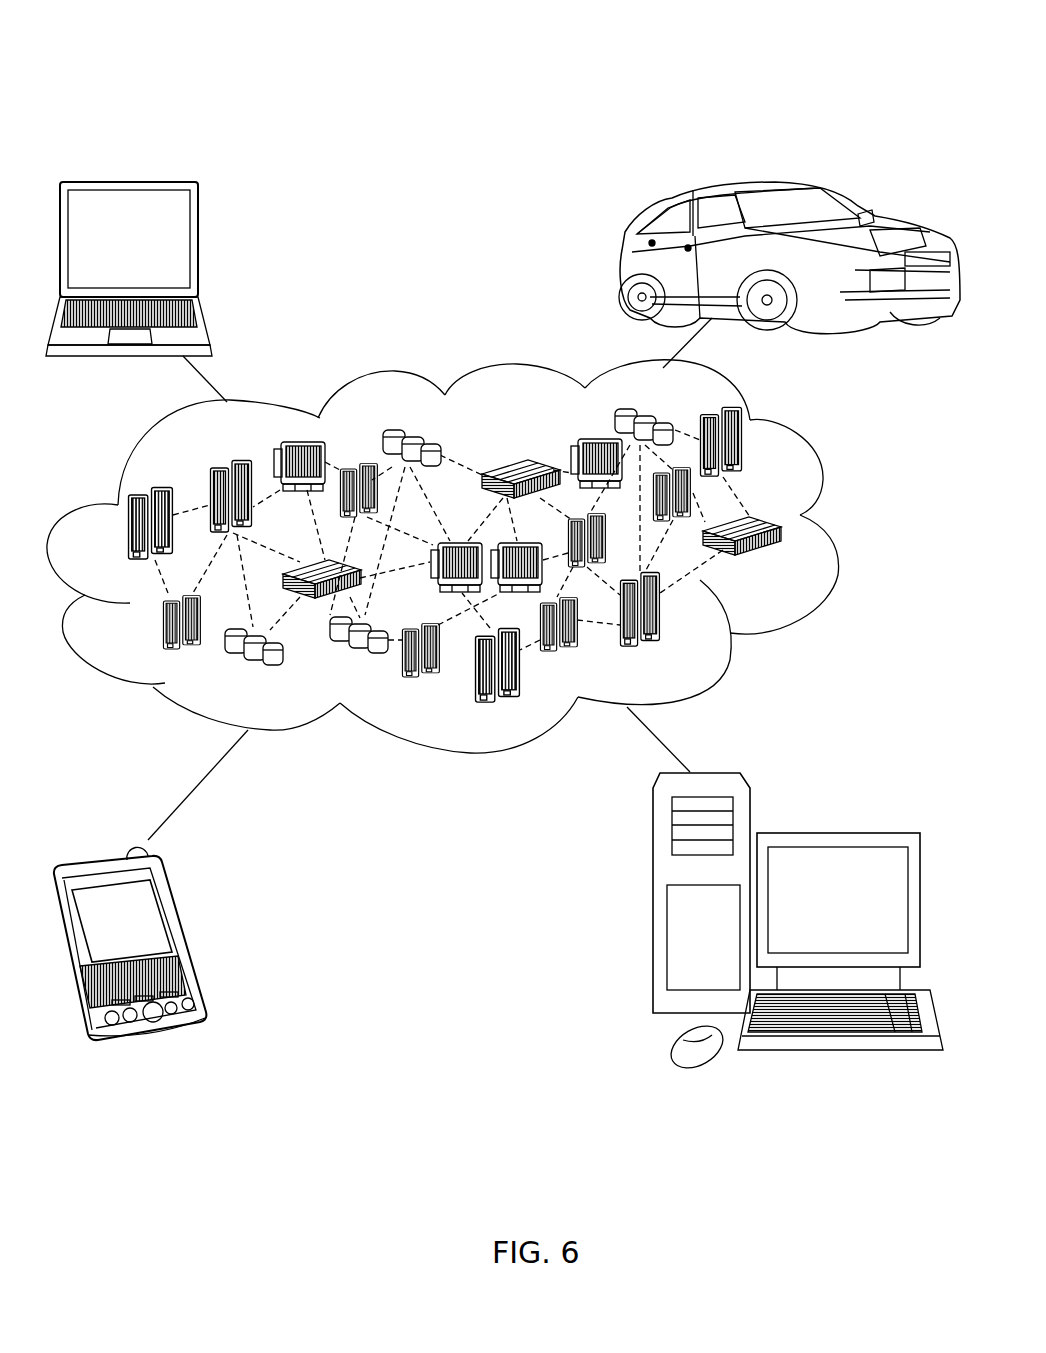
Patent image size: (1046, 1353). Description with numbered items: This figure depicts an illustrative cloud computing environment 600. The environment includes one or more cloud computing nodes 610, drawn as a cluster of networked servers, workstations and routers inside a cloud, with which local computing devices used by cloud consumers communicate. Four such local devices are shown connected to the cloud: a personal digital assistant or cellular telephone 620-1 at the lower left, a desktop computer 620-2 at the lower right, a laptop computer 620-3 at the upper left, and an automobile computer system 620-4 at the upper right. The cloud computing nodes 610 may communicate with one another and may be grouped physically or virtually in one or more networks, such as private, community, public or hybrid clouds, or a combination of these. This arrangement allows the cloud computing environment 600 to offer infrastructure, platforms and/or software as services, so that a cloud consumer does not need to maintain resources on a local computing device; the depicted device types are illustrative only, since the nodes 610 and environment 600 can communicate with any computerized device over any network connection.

The cloud computing environment 600 is at (782, 40).
The cloud computing nodes 610 is at (790, 566).
The personal digital assistant or cellular telephone 620-1 is at (192, 934).
The desktop computer 620-2 is at (850, 812).
The laptop computer 620-3 is at (198, 245).
The automobile computer system 620-4 is at (620, 262).